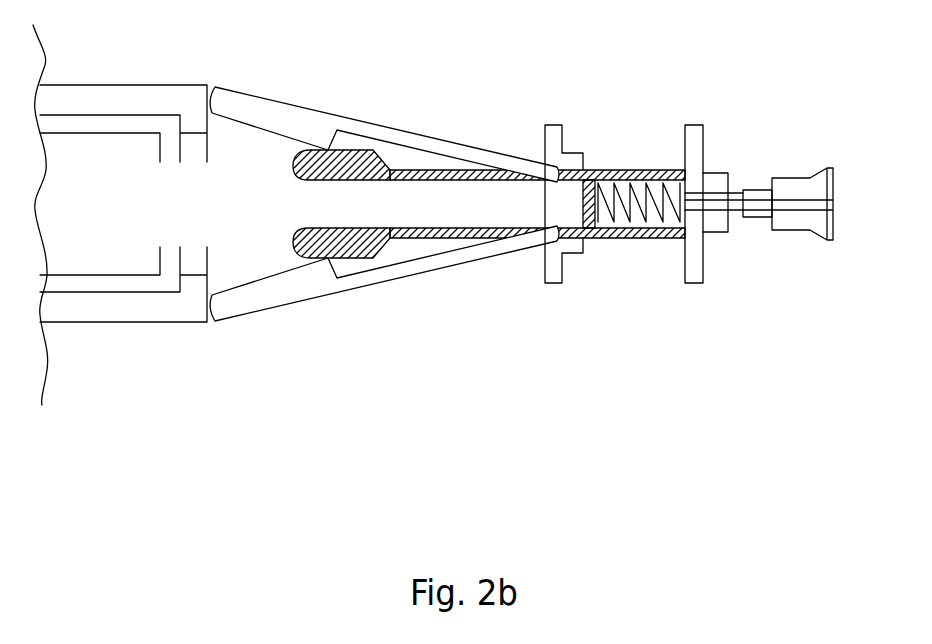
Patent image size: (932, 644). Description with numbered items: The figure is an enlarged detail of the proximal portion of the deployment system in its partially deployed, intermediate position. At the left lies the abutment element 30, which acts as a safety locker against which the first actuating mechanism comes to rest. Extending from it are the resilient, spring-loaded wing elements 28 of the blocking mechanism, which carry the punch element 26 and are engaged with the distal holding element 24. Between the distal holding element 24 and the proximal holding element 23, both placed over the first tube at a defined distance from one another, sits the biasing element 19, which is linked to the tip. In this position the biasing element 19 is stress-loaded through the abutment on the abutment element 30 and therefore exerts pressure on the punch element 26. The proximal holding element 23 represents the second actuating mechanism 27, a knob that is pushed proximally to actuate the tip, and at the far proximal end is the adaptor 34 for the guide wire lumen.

The abutment element 30 is at (98, 86).
The resilient wing elements 28 is at (287, 100).
The punch element 26 is at (385, 240).
The biasing element 19 is at (647, 170).
The distal holding element 24 is at (562, 270).
The second actuating mechanism 27 is at (695, 283).
The proximal holding element 23 is at (703, 270).
The adaptor for the guide wire lumen 34 is at (820, 184).